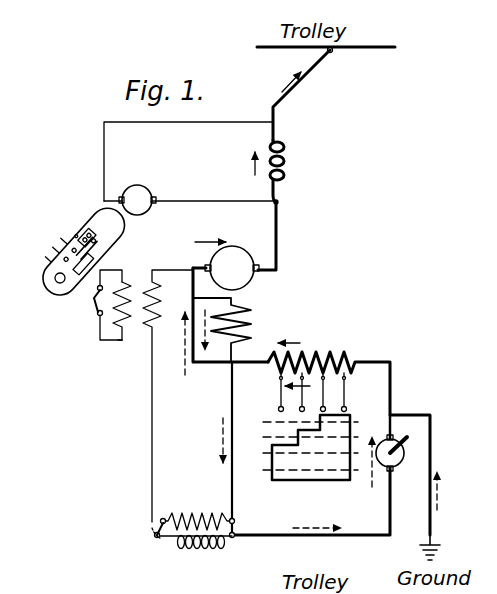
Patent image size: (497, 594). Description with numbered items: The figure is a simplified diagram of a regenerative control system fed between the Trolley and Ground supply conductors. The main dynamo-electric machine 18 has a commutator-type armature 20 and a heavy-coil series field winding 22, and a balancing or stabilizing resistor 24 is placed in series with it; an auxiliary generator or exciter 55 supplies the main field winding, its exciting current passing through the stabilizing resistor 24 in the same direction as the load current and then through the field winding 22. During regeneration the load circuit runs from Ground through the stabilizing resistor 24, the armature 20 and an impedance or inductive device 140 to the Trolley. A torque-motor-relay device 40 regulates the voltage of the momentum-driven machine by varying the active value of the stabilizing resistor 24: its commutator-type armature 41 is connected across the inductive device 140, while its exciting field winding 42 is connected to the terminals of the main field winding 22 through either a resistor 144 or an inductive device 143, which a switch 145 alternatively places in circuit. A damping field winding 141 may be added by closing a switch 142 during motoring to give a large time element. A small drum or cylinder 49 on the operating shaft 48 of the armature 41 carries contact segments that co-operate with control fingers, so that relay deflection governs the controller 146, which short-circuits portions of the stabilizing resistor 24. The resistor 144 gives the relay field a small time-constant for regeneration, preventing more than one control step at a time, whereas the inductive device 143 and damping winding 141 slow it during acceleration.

The main dynamo-electric machine 18 is at (284, 297).
The armature 20 is at (245, 261).
The field winding 22 is at (251, 344).
The balancing or stabilizing resistor 24 is at (322, 354).
The torque-motor-relay device 40 is at (95, 200).
The armature 41 is at (146, 198).
The exciting field winding 42 is at (159, 305).
The operating shaft 48 is at (127, 221).
The drum or cylinder 49 is at (113, 245).
The auxiliary generator or exciter 55 is at (396, 468).
The impedance or inductive device 140 is at (283, 172).
The damping field winding 141 is at (128, 322).
The switch 142 is at (97, 309).
The inductive device 143 is at (193, 548).
The resistor 144 is at (200, 510).
The switch 145 is at (158, 522).
The controller 146 is at (326, 480).